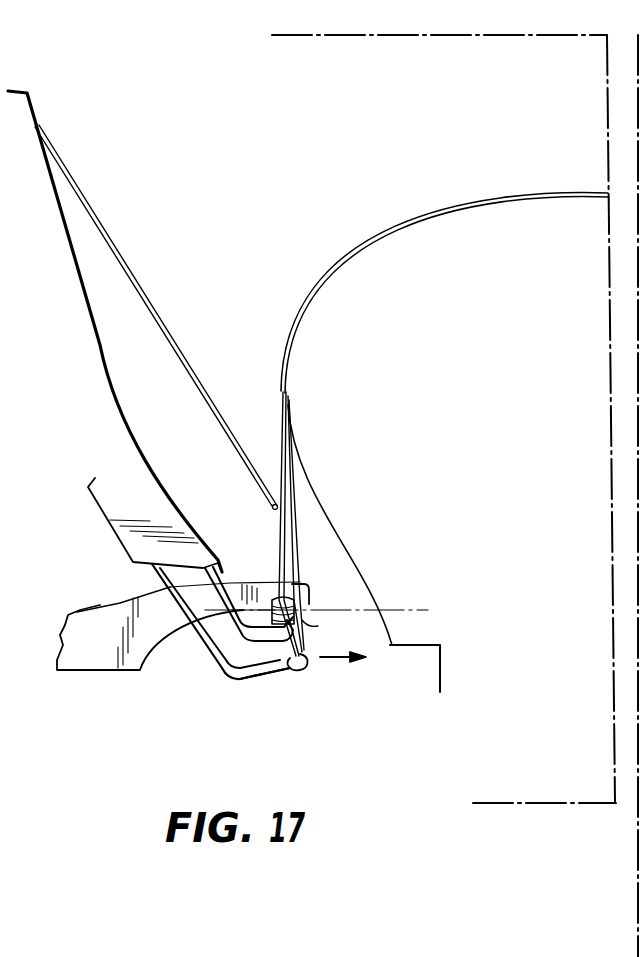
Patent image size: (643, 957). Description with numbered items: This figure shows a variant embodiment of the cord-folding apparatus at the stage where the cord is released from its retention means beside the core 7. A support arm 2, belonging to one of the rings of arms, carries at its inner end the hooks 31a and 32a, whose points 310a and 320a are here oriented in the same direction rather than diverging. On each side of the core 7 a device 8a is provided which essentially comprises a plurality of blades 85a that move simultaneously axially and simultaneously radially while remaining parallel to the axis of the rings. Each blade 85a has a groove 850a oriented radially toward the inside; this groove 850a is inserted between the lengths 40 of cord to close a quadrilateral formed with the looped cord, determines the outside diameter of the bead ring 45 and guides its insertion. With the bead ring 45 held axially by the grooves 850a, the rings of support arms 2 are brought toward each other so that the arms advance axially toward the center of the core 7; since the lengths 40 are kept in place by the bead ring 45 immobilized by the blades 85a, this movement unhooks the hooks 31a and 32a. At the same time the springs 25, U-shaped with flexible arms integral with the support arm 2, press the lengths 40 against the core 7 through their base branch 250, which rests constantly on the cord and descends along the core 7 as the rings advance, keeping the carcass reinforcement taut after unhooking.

The core 7 is at (494, 226).
The lengths of cord 40 is at (288, 462).
The support arm 2 is at (120, 438).
The spring 25 is at (170, 332).
The base branch 250 is at (273, 509).
The hook 31a is at (238, 618).
The hook 32a is at (262, 675).
The point of the hook 320a is at (296, 670).
The point of the hook 310a is at (258, 608).
The groove 850a is at (283, 598).
The bead ring 45 is at (303, 625).
The blade 85a is at (107, 657).
The device 8a is at (44, 625).